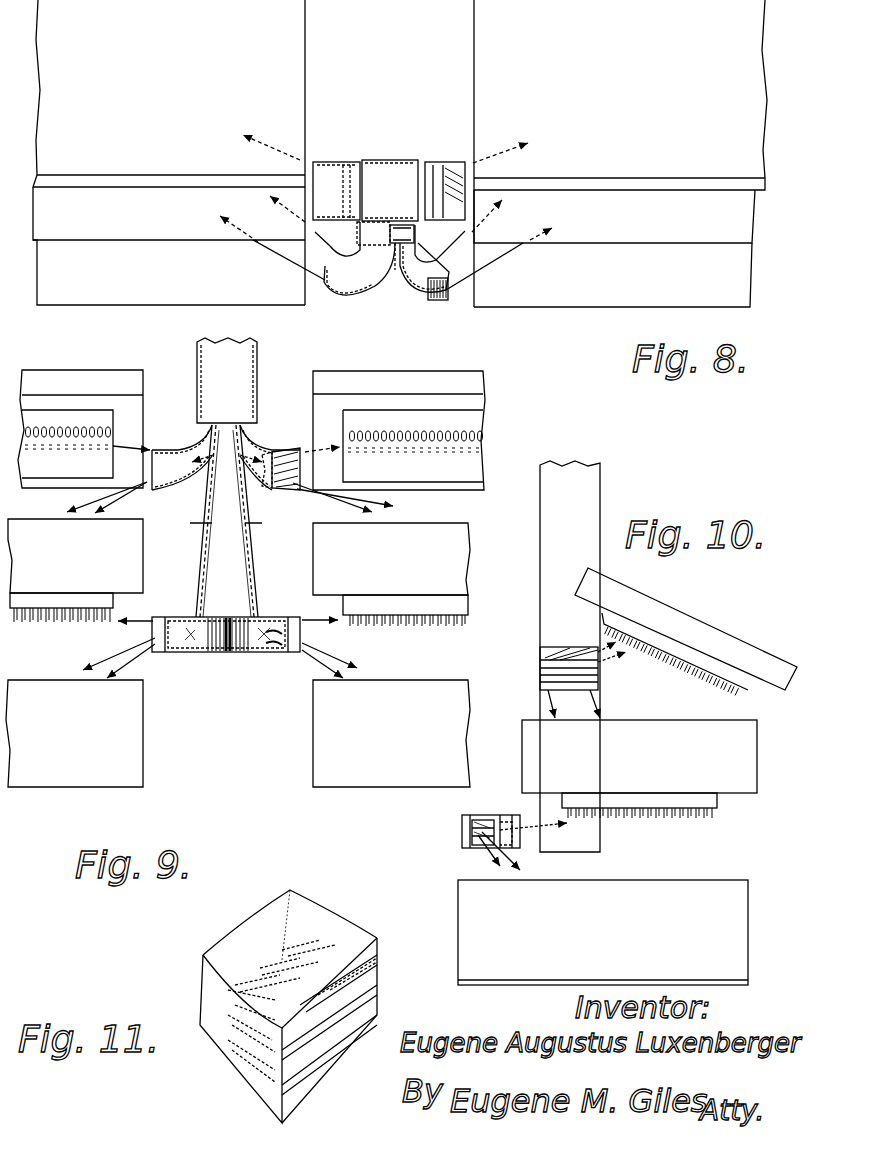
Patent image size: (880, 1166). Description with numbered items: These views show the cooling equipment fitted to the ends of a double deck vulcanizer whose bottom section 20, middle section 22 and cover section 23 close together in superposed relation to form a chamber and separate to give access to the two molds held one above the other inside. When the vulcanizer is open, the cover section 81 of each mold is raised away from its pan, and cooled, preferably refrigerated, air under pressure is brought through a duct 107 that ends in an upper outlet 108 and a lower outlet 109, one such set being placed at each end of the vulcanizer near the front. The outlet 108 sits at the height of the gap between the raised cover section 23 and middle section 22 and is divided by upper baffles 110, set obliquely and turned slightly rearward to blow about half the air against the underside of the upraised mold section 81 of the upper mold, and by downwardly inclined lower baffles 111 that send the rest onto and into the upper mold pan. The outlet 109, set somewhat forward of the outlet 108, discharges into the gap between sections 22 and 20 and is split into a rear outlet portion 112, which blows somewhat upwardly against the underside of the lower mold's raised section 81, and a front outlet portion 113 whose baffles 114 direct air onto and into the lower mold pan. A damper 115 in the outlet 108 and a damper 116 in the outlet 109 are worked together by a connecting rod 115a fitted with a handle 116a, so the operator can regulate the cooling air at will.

In FIG. 8, the bottom section 20 is at (135, 266).
In FIG. 9, the bottom section 20 is at (62, 780).
In FIG. 10, the bottom section 20 is at (665, 898).
In FIG. 8, the middle section 22 is at (95, 205).
In FIG. 9, the middle section 22 is at (75, 556).
In FIG. 10, the middle section 22 is at (745, 767).
In FIG. 8, the cover section 23 is at (305, 60).
In FIG. 9, the cover section 23 is at (93, 380).
In FIG. 10, the cover section 23 is at (717, 630).
In FIG. 9, the cover section of mold 81 is at (108, 420).
In FIG. 10, the cover section of mold 81 is at (737, 688).
In FIG. 8, the duct 107 is at (395, 160).
In FIG. 9, the duct 107 is at (252, 358).
In FIG. 10, the duct 107 is at (570, 656).
In FIG. 8, the cooled air outlet 108 is at (325, 162).
In FIG. 9, the cooled air outlet 108 is at (270, 440).
In FIG. 11, the cooled air outlet 108 is at (295, 892).
In FIG. 8, the lower outlet 109 is at (345, 300).
In FIG. 9, the lower outlet 109 is at (266, 617).
In FIG. 10, the lower outlet 109 is at (462, 838).
In FIG. 10, the upper baffles 110 is at (540, 658).
In FIG. 11, the upper baffles 110 is at (360, 986).
In FIG. 9, the lower baffles 111 is at (278, 488).
In FIG. 10, the lower baffles 111 is at (540, 690).
In FIG. 11, the lower baffles 111 is at (320, 1062).
In FIG. 8, the rear outlet portion 112 is at (424, 235).
In FIG. 10, the rear outlet portion 112 is at (515, 848).
In FIG. 8, the front outlet portion 113 is at (440, 300).
In FIG. 10, the front outlet portion 113 is at (473, 845).
In FIG. 9, the baffles 114 is at (280, 652).
In FIG. 10, the baffles 114 is at (486, 835).
In FIG. 9, the damper 115 is at (268, 458).
In FIG. 9, the connecting rod 115a is at (256, 560).
In FIG. 8, the damper 116 is at (385, 292).
In FIG. 9, the damper 116 is at (232, 655).
In FIG. 9, the handle 116a is at (262, 523).